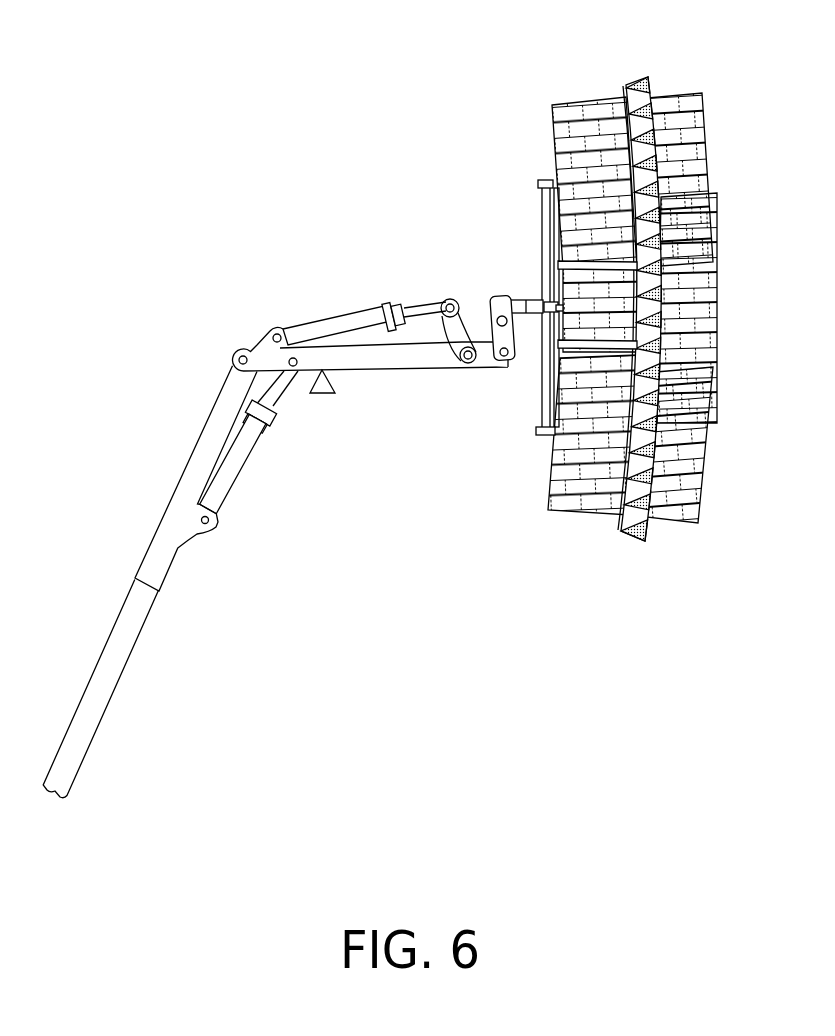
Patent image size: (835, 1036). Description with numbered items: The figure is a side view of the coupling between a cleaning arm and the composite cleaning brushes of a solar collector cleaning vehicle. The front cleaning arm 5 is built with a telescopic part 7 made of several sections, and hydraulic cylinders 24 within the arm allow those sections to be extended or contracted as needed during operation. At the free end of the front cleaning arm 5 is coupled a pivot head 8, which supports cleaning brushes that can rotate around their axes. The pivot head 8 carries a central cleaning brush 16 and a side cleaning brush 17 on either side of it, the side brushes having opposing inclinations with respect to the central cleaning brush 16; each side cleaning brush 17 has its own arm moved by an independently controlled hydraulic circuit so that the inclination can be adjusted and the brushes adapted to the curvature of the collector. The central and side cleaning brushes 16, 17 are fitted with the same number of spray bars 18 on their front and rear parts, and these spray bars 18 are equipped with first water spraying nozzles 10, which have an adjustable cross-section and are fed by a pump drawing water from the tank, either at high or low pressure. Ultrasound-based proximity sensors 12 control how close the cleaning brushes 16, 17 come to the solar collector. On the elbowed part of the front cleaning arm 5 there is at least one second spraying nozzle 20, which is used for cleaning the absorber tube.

The front cleaning arm 5 is at (200, 432).
The telescopic part 7 is at (160, 545).
The pivot head 8 is at (545, 183).
The first water spraying nozzle 10 is at (645, 80).
The ultrasound-based proximity sensor 12 is at (560, 308).
The central cleaning brush 16 is at (700, 308).
The side cleaning brush 17 is at (687, 135).
The spray bar 18 is at (630, 108).
The second spraying nozzle 20 is at (325, 393).
The hydraulic cylinder 24 is at (337, 313).